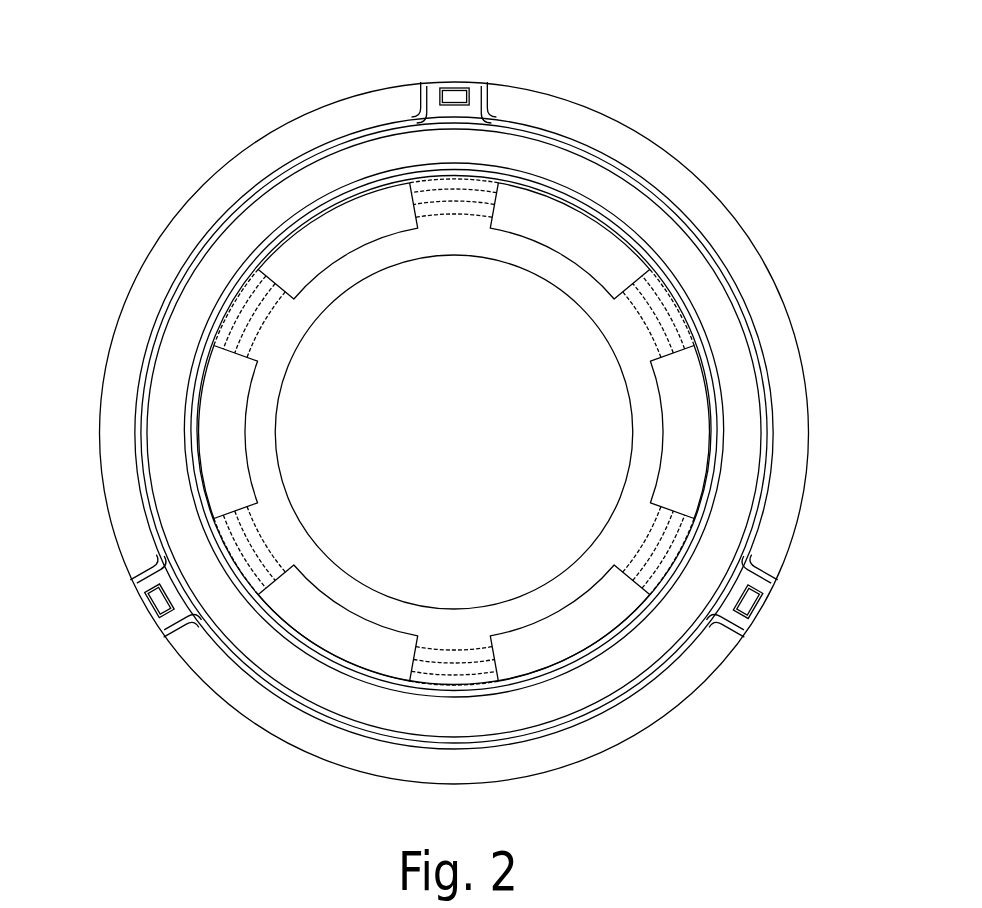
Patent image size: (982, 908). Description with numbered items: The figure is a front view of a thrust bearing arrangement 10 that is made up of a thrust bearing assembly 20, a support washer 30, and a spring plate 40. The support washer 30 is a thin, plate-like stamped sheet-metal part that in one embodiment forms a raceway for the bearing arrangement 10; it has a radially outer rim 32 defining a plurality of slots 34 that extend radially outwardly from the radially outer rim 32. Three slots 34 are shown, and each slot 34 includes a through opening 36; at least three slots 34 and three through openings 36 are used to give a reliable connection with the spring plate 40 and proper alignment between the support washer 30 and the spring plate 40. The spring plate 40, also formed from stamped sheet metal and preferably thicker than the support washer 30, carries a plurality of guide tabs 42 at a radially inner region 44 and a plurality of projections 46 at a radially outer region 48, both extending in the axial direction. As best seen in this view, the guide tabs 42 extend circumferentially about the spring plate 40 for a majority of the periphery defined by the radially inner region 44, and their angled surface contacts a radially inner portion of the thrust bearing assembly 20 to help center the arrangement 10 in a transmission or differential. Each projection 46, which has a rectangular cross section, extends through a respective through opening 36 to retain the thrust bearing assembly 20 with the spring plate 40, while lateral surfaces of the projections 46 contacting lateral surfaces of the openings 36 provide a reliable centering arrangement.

The thrust bearing arrangement 10 is at (744, 189).
The thrust bearing assembly 20 is at (577, 179).
The support washer 30 is at (455, 367).
The radially outer rim 32 is at (768, 512).
The slots 34 is at (485, 84).
The through opening 36 is at (452, 88).
The spring plate 40 is at (788, 349).
The guide tabs 42 is at (653, 290).
The radially inner region 44 is at (636, 338).
The projections 46 is at (459, 95).
The radially outer region 48 is at (793, 413).